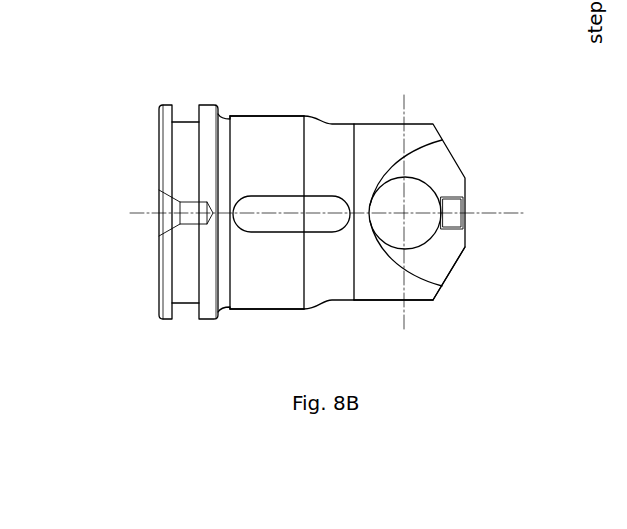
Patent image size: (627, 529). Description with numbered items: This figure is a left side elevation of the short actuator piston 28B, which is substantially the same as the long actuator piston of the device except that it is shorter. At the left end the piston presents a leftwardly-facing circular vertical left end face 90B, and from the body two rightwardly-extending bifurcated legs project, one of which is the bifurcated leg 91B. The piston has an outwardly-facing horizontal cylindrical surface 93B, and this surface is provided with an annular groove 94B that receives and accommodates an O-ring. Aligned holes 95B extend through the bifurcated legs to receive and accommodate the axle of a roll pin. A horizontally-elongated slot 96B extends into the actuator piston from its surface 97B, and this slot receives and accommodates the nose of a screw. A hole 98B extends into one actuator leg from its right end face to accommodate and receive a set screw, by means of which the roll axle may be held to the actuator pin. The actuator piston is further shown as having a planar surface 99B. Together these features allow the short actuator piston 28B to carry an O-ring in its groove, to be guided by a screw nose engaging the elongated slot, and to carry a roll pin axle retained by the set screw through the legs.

The short actuator piston 28B is at (435, 87).
The left end face 90B is at (155, 155).
The bifurcated leg 91B is at (463, 251).
The cylindrical surface 93B is at (205, 103).
The annular groove 94B is at (185, 307).
The hole 95B is at (420, 198).
The horizontally-elongated slot 96B is at (281, 222).
The surface 97B is at (265, 127).
The hole 98B is at (468, 198).
The planar surface 99B is at (434, 266).